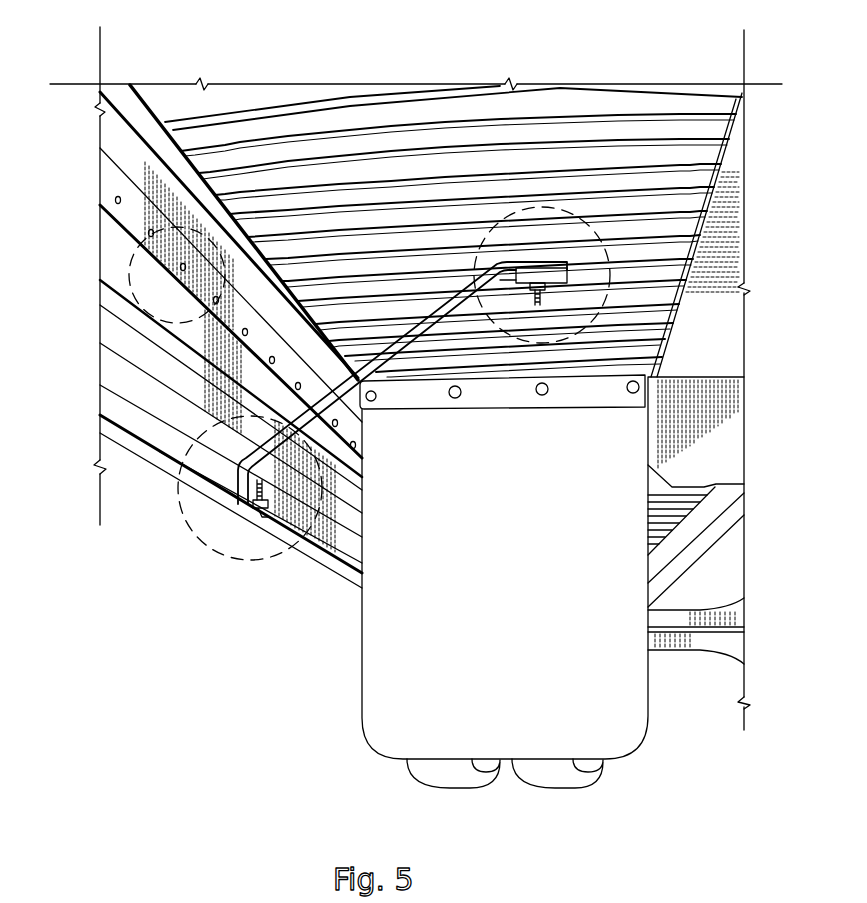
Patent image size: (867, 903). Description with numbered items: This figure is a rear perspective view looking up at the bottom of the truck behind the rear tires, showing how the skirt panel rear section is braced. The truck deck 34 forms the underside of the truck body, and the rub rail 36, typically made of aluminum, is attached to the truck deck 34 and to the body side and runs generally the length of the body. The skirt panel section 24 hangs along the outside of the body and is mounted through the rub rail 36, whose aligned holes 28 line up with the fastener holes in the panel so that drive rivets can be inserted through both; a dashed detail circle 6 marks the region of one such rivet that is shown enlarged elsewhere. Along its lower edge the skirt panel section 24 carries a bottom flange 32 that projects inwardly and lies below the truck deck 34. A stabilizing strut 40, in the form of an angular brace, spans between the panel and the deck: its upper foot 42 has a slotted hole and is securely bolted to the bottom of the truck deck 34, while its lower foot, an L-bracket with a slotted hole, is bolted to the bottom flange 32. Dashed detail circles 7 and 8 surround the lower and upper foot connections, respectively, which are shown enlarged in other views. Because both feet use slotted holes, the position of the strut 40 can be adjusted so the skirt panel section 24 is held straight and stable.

The mounting bracket 6 is at (145, 303).
The detail region of Fig. 7 is at (258, 572).
The detail region of Fig. 8 is at (538, 212).
The skirt panel section 24 is at (120, 250).
The aligned holes 28 is at (118, 200).
The bottom flange 32 is at (118, 428).
The truck deck 34 is at (327, 133).
The rub rail 36 is at (117, 137).
The stabilizing strut 40 is at (200, 432).
The upper foot 42 is at (567, 263).